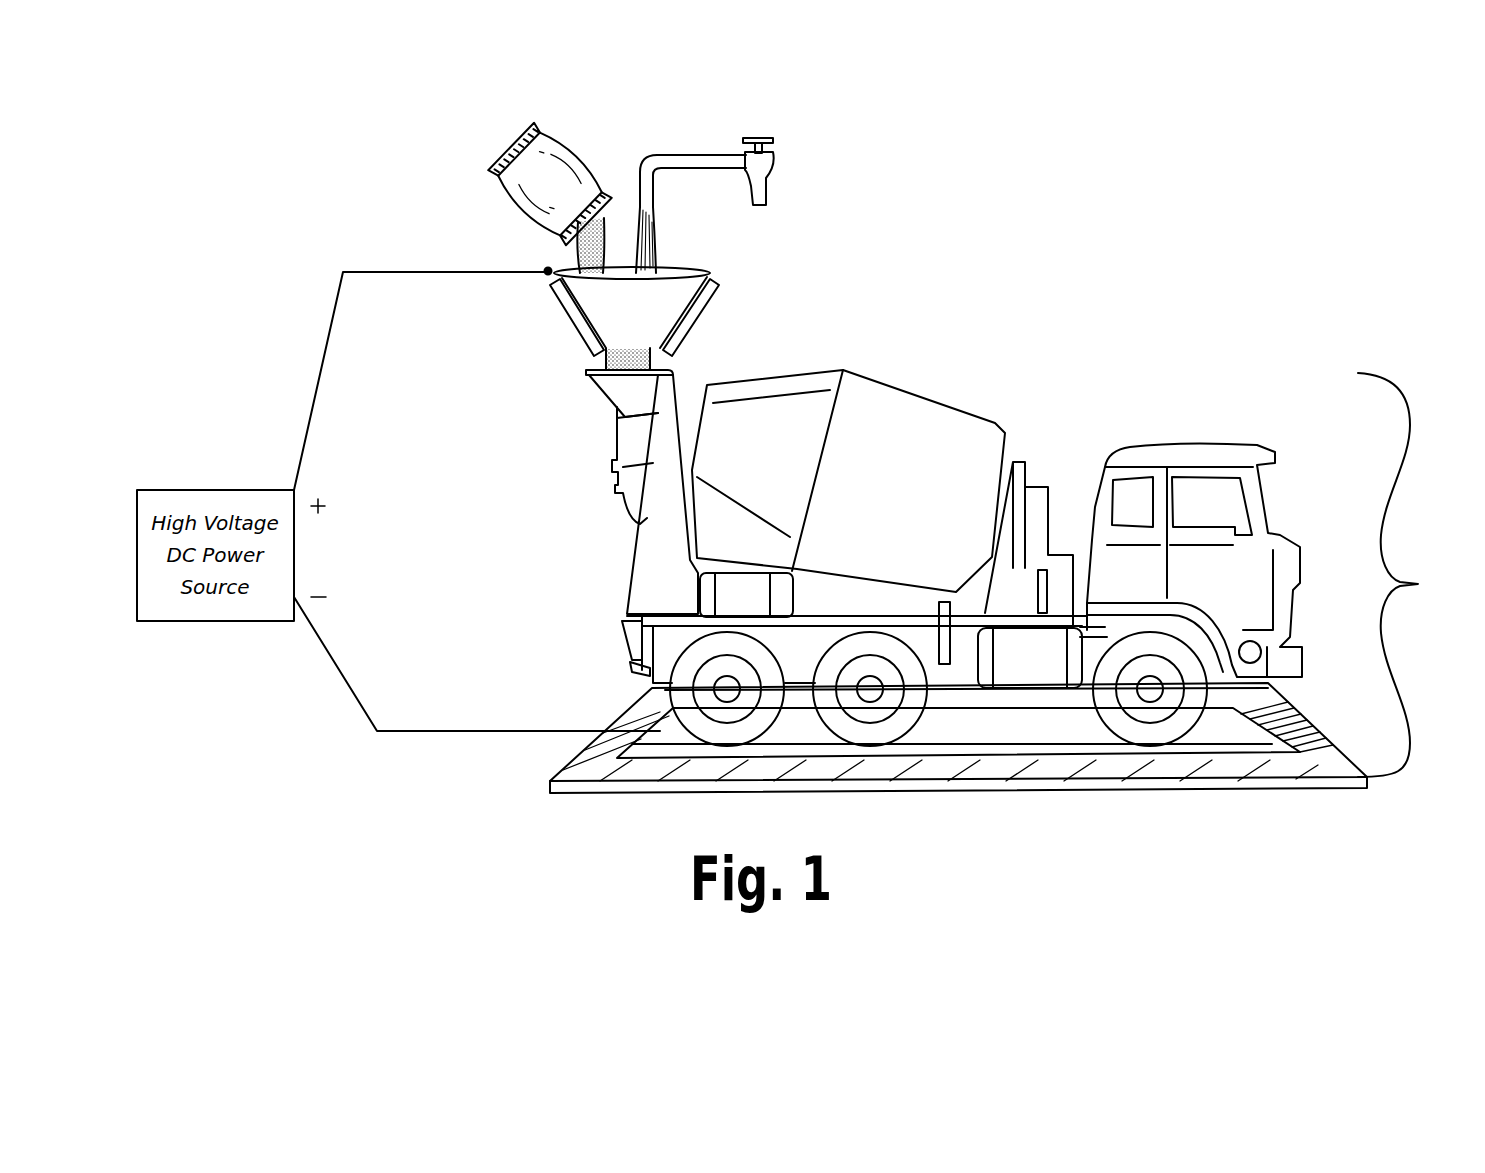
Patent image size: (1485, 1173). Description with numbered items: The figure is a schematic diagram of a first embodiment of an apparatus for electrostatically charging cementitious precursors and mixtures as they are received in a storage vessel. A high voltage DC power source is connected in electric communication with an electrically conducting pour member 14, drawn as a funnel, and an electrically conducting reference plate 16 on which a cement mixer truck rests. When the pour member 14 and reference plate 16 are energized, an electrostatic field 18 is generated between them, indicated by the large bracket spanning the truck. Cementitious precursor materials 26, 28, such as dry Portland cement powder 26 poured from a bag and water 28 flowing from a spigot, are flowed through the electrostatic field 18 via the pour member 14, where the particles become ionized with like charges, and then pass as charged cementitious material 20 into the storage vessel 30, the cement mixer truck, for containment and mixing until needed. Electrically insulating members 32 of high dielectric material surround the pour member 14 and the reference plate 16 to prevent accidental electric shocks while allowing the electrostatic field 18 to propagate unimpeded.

The electrically conducting pour member 14 is at (683, 313).
The electrically conducting reference plate 16 is at (1287, 697).
The electrostatic field 18 is at (1412, 584).
The fluid cementitious material 20 is at (604, 358).
The cementitious precursor material 26 is at (562, 194).
The cementitious precursor material 28 is at (652, 234).
The storage vessel 30 is at (985, 410).
The electrically insulating member 32 is at (568, 323).